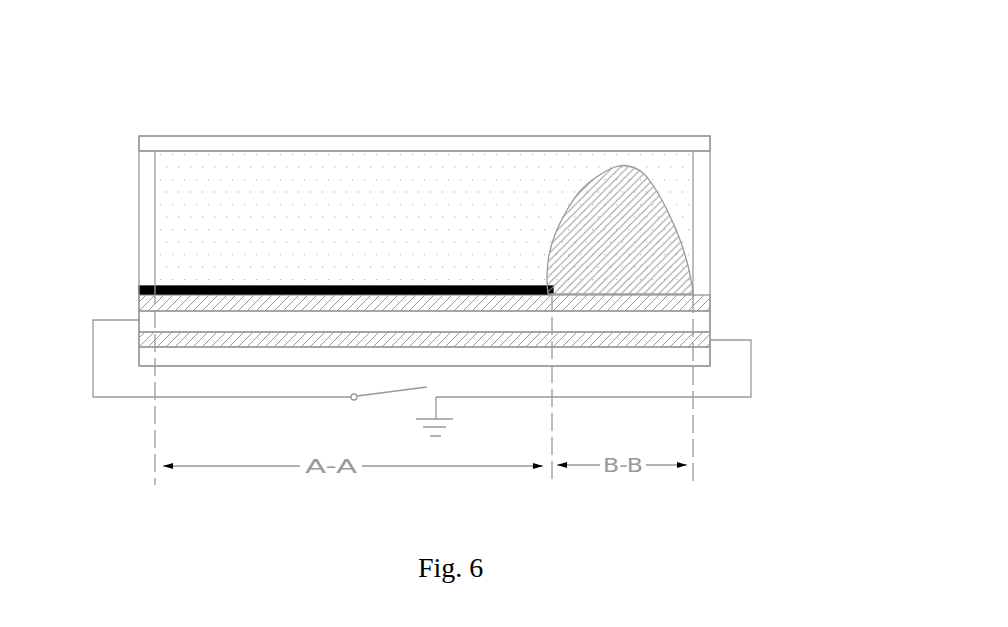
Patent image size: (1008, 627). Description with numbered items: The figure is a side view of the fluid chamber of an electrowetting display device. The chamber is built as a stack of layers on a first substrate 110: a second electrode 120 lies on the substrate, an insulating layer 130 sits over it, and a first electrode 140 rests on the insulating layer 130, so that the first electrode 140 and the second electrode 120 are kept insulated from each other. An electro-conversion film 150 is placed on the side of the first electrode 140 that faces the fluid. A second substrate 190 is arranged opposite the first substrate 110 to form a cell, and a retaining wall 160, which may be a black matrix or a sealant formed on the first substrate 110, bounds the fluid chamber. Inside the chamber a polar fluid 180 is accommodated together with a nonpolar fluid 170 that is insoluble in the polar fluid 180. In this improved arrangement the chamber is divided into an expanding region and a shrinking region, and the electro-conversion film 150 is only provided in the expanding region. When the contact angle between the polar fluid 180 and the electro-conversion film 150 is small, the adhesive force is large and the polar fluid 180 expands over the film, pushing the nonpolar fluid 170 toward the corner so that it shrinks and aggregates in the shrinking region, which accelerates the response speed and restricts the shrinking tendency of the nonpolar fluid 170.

The first substrate 110 is at (698, 355).
The second electrode 120 is at (702, 338).
The insulating layer 130 is at (707, 320).
The first electrode 140 is at (702, 299).
The electro-conversion film 150 is at (160, 287).
The retaining wall 160 is at (704, 207).
The nonpolar fluid 170 is at (645, 212).
The polar fluid 180 is at (308, 175).
The second substrate 190 is at (497, 145).